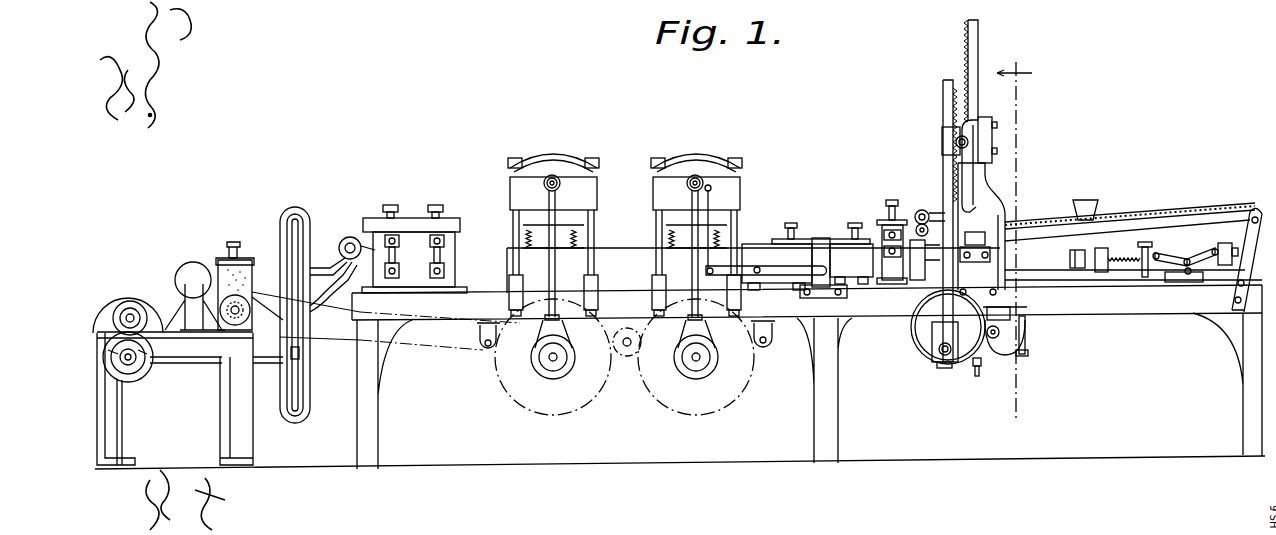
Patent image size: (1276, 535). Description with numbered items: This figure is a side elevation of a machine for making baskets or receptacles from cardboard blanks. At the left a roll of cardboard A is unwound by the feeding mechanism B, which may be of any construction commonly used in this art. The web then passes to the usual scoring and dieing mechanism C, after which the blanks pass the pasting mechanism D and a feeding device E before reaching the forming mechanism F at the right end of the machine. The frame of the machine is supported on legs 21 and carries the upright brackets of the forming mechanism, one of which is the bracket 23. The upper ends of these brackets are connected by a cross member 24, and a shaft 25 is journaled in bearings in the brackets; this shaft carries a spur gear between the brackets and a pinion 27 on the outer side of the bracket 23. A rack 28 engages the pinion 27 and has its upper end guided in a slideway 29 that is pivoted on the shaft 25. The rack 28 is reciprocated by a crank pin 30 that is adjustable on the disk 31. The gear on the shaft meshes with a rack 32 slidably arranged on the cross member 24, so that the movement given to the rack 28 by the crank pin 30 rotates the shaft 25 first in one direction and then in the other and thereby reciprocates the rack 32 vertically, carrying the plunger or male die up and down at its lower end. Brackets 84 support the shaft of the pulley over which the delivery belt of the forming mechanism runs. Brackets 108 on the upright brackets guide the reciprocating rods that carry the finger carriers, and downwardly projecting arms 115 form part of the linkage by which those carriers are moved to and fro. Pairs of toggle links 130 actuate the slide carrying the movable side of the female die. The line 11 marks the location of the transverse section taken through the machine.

The section line 11— 11 is at (1021, 231).
The legs 21 is at (366, 423).
The upright bracket 23 is at (962, 180).
The cross member 24 is at (988, 146).
The shaft 25 is at (956, 142).
The pinion 27 is at (981, 229).
The rack 28 is at (950, 100).
The slideway 29 is at (946, 133).
The crank pin 30 is at (936, 360).
The disk 31 is at (920, 333).
The rack 32 is at (968, 38).
The brackets 84 is at (1243, 240).
The brackets 108 is at (987, 231).
The downwardly projecting arms 115 is at (1028, 345).
The toggle links 130 is at (1203, 264).
The roll of cardboard A is at (128, 290).
The feeding mechanism B is at (403, 200).
The scoring and dieing mechanism C is at (652, 284).
The pasting mechanism D is at (815, 236).
The feeding device E is at (883, 218).
The forming mechanism F is at (1133, 231).